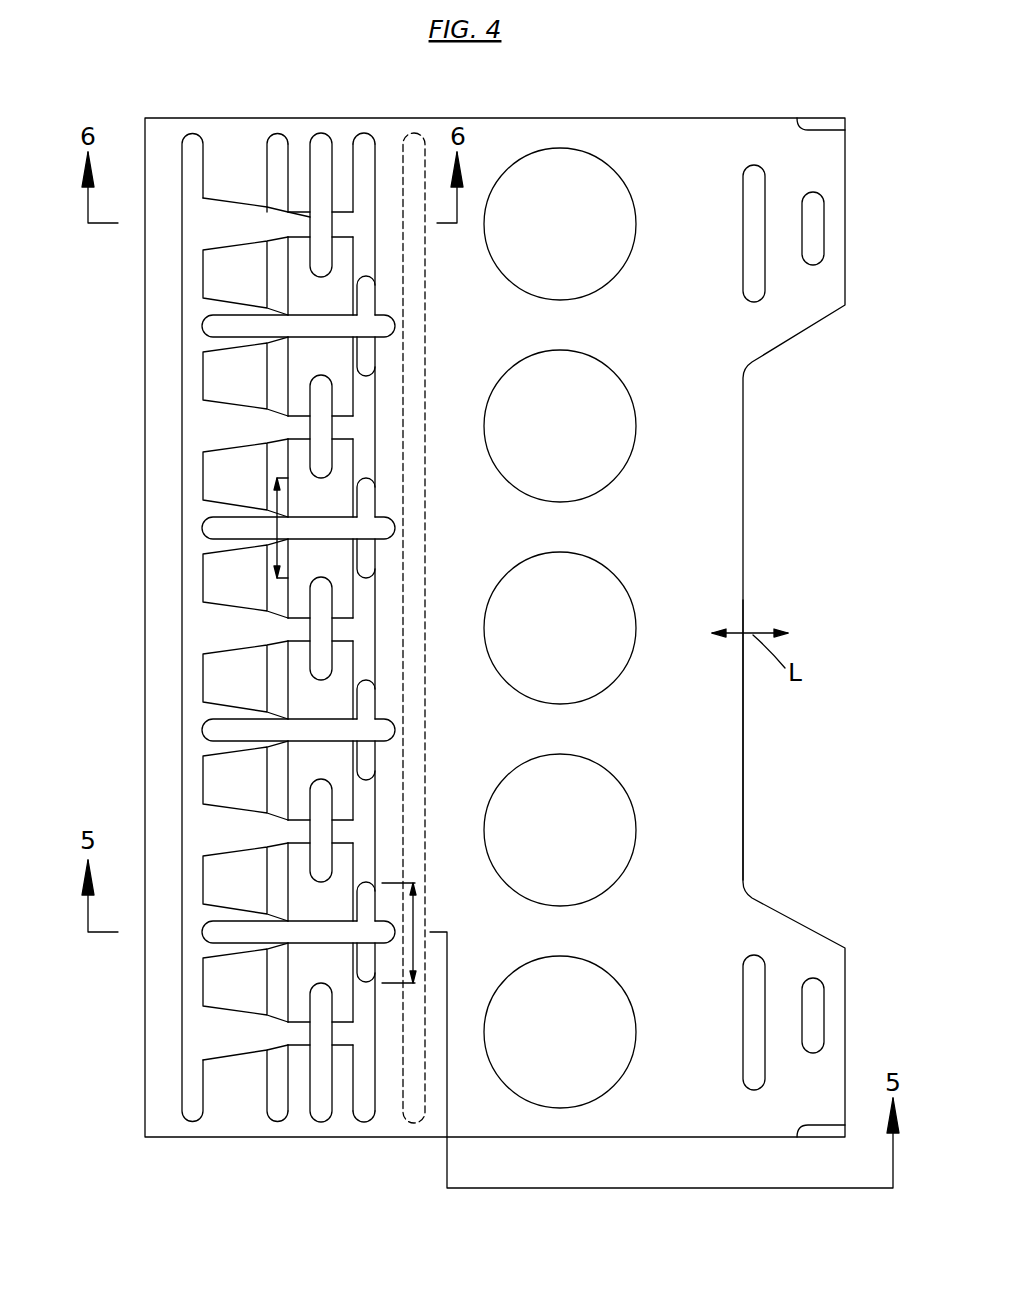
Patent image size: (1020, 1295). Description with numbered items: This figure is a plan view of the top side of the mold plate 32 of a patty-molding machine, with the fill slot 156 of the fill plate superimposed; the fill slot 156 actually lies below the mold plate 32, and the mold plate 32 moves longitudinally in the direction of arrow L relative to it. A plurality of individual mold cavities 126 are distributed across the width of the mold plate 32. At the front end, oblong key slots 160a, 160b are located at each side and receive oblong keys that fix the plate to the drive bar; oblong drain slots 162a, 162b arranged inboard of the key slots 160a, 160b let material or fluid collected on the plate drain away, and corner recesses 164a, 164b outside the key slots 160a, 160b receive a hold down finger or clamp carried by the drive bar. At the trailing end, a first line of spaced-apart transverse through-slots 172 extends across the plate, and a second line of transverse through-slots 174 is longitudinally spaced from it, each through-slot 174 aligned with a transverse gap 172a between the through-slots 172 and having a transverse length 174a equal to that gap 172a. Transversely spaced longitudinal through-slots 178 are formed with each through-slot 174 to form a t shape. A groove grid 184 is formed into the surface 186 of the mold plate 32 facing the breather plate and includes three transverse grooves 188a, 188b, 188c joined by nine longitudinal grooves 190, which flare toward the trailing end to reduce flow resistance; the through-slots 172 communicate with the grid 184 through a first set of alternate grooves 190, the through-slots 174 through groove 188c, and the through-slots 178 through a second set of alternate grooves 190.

The mold plate 32 is at (745, 585).
The mold cavities 126 is at (612, 452).
The fill slot 156 is at (425, 735).
The key slot 160a is at (812, 1015).
The key slot 160b is at (813, 245).
The drain slot 162a is at (752, 980).
The drain slot 162b is at (752, 265).
The corner recess 164a is at (822, 1130).
The corner recess 164b is at (813, 127).
The transverse through-slots 172 is at (322, 400).
The transverse gap 172a is at (272, 510).
The transverse through-slots 174 is at (362, 300).
The transverse length 174a is at (413, 932).
The longitudinal through-slots 178 is at (345, 327).
The groove grid 184 is at (278, 1120).
The surface 186 is at (735, 843).
The transverse groove 188a is at (188, 133).
The transverse groove 188b is at (273, 133).
The transverse groove 188c is at (360, 133).
The longitudinal grooves 190 is at (215, 630).